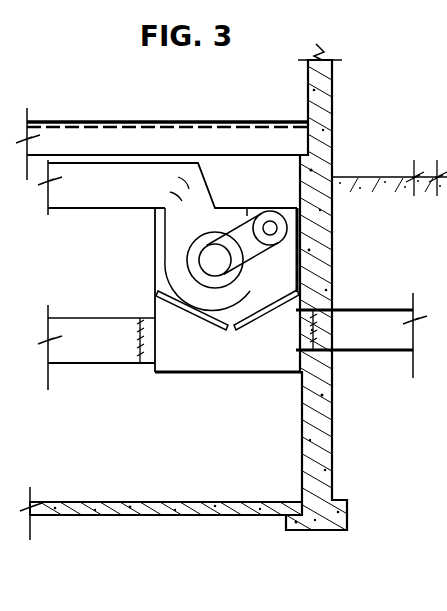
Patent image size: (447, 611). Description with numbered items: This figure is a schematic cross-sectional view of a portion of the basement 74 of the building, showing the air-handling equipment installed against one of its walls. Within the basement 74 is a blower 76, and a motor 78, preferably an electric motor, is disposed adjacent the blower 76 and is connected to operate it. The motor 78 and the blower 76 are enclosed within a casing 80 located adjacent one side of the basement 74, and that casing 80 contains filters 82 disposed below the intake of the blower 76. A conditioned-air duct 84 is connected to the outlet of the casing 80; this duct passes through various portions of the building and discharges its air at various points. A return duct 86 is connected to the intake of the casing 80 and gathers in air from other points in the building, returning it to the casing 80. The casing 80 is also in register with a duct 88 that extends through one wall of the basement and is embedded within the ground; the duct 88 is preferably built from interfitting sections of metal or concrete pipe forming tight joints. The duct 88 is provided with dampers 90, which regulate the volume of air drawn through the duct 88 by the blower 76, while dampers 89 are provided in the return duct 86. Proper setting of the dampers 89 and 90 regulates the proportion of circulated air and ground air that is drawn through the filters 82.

The basement 74 is at (97, 515).
The blower 76 is at (193, 256).
The motor 78 is at (267, 212).
The casing 80 is at (219, 374).
The filters 82 is at (218, 330).
The conditioned-air duct 84 is at (80, 197).
The return duct 86 is at (100, 364).
The duct 88 is at (355, 308).
The dampers 89 is at (142, 363).
The dampers 90 is at (312, 320).